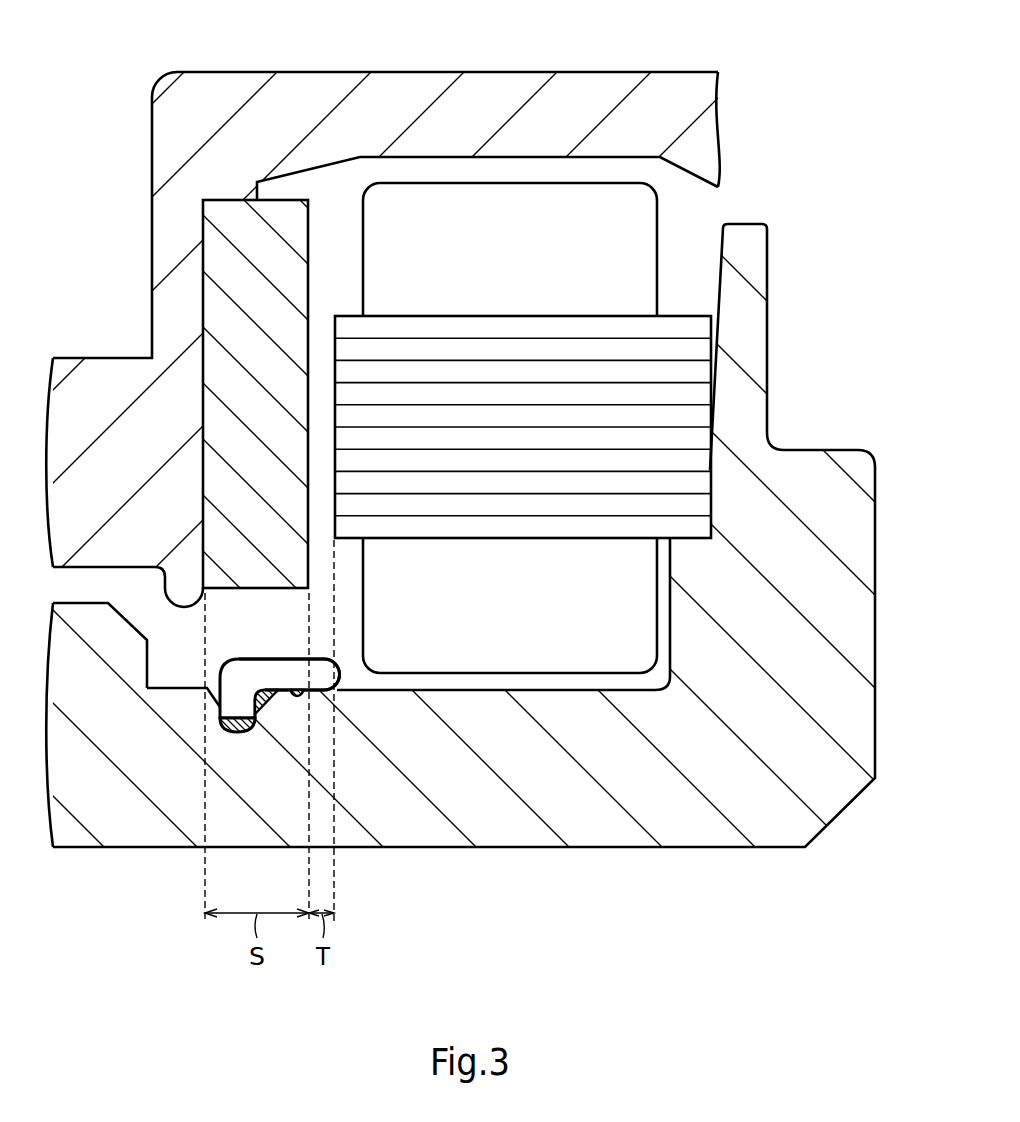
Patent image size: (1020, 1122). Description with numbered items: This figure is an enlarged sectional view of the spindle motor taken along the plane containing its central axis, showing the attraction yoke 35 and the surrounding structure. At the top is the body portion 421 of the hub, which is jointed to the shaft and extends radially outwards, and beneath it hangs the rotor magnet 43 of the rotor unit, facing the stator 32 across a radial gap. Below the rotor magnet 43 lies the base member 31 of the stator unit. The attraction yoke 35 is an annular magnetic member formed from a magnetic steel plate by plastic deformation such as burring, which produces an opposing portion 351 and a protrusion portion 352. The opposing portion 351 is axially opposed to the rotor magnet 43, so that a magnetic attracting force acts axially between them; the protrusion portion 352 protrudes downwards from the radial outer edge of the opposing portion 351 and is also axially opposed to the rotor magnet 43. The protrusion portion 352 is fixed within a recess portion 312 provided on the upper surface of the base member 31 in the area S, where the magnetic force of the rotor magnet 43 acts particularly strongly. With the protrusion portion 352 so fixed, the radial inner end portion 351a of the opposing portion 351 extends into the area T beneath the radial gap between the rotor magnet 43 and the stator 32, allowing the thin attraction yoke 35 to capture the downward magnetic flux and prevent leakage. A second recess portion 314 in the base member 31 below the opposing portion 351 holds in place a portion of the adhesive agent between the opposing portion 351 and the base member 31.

The body portion 421 is at (517, 87).
The rotor magnet 43 is at (213, 260).
The stator 32 is at (502, 675).
The base member 31 is at (686, 832).
The recess portion 312 is at (235, 733).
The second recess portion 314 is at (298, 697).
The attraction yoke 35 is at (307, 623).
The opposing portion 351 is at (292, 677).
The radial inner end portion 351a is at (338, 675).
The protrusion portion 352 is at (232, 712).